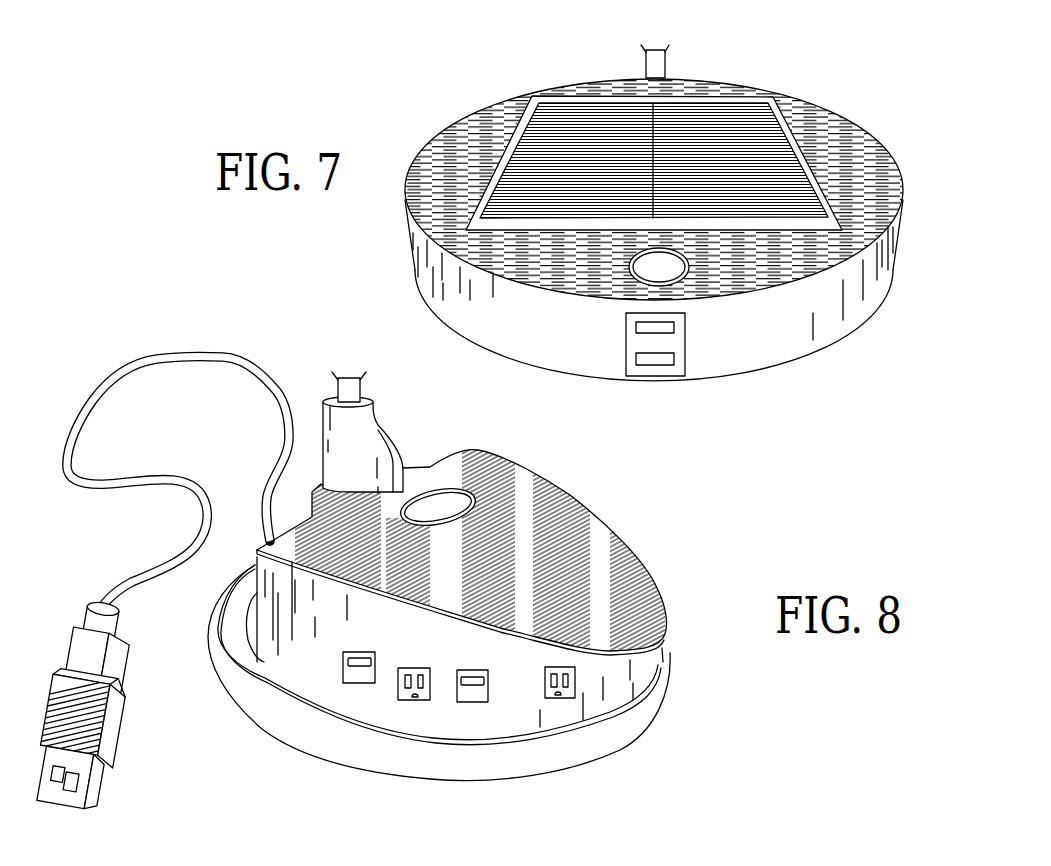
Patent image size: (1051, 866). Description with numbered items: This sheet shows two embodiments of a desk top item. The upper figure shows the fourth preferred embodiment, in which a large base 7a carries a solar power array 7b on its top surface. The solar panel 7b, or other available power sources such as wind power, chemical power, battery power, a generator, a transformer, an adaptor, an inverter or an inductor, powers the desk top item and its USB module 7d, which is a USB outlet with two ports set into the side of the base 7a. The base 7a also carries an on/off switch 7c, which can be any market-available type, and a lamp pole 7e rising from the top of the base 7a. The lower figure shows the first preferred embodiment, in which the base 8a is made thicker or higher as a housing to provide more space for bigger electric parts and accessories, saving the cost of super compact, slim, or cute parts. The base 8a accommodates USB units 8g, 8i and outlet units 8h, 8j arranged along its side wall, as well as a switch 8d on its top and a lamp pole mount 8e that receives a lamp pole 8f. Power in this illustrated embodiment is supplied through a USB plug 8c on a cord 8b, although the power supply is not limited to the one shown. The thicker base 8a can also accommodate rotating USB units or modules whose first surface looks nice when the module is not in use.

In FIG. 7, the large base 7a is at (791, 345).
In FIG. 7, the solar panel 7b is at (786, 212).
In FIG. 7, the on/off switch 7c is at (646, 271).
In FIG. 7, the USB module 7d is at (678, 343).
In FIG. 7, the lamp pole 7e is at (655, 72).
In FIG. 8, the base 8a is at (287, 683).
In FIG. 8, the cord 8b is at (125, 361).
In FIG. 8, the USB plug 8c is at (80, 642).
In FIG. 8, the switch 8d is at (453, 497).
In FIG. 8, the lamp pole mount 8e is at (370, 442).
In FIG. 8, the lamp pole 8f is at (348, 392).
In FIG. 8, the USB unit 8g is at (355, 677).
In FIG. 8, the outlet unit 8h is at (408, 700).
In FIG. 8, the USB unit 8i is at (473, 700).
In FIG. 8, the outlet unit 8j is at (577, 690).